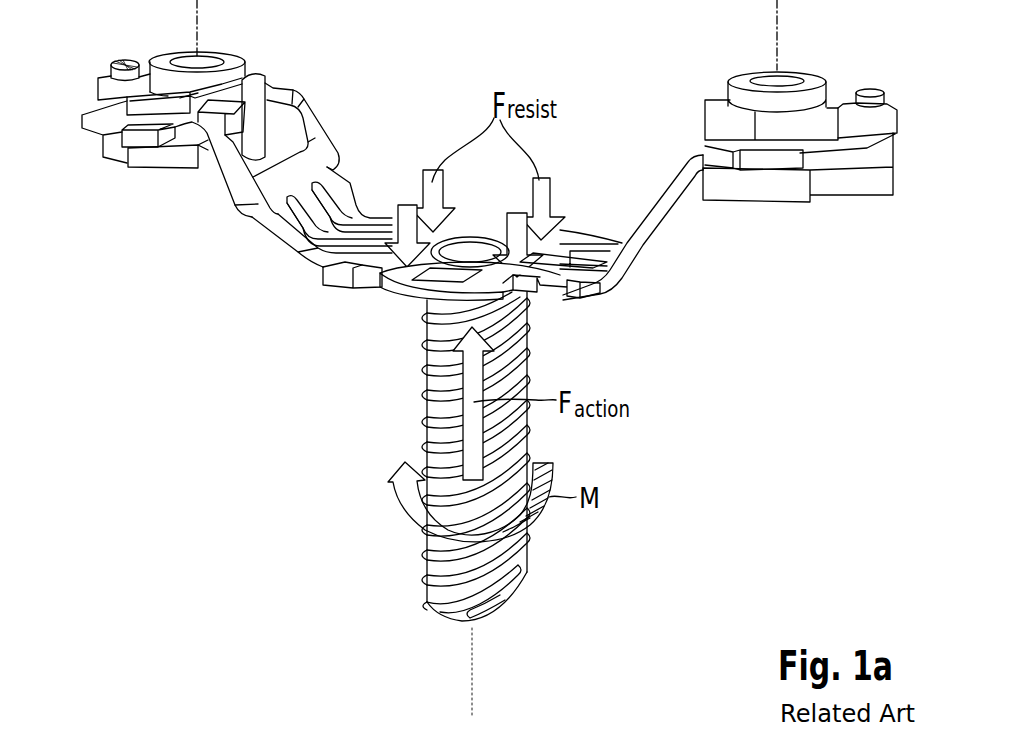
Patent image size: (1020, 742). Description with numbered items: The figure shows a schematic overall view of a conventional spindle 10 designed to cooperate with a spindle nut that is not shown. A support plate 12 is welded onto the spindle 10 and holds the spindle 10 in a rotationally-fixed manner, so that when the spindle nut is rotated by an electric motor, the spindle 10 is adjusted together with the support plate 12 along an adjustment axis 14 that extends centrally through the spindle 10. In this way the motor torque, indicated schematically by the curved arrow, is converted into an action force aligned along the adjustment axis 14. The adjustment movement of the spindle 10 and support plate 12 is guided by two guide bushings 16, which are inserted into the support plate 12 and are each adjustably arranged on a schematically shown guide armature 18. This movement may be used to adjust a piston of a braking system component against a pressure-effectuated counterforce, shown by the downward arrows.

The conventional spindle 10 is at (521, 583).
The support plate 12 is at (608, 278).
The adjustment axis 14 is at (474, 688).
The guide bushing 16 is at (176, 88).
The guide armature 18 is at (199, 33).